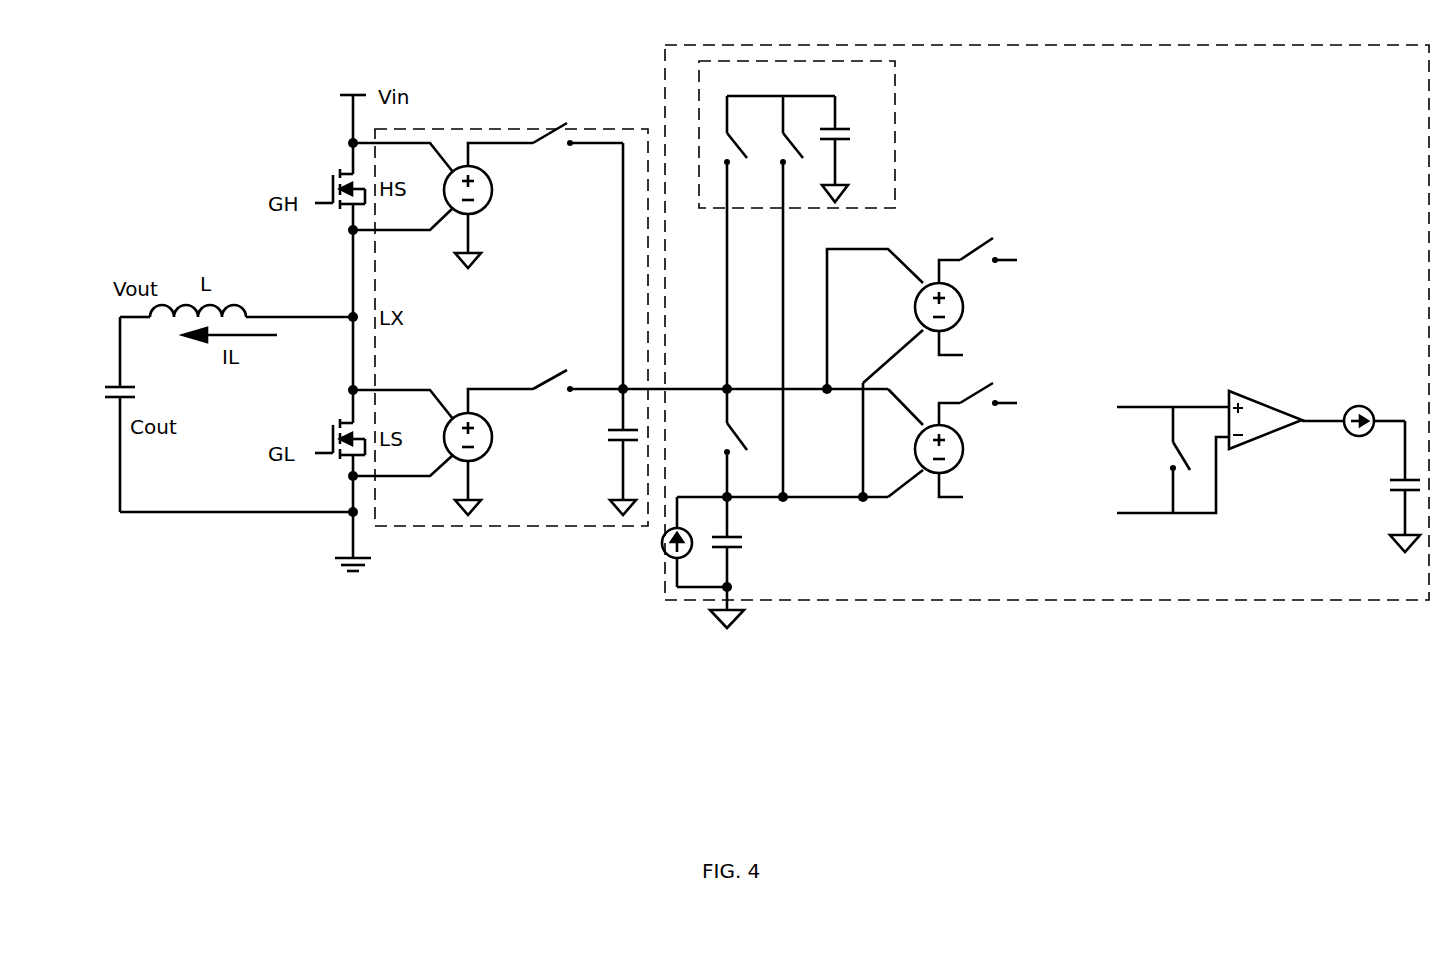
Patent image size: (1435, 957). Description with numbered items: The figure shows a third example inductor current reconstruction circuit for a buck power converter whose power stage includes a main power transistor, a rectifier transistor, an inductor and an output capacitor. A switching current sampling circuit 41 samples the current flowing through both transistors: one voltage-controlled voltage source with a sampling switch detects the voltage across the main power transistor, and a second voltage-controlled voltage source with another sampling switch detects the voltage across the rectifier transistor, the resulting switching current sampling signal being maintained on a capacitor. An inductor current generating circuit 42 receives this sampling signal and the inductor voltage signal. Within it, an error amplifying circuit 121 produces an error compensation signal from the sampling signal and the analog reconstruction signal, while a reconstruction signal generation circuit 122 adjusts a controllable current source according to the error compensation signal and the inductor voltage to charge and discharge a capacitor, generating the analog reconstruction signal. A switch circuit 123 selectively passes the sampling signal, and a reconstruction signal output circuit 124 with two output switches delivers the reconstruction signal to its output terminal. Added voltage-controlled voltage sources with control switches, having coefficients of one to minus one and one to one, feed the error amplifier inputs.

The switching current sampling circuit 41 is at (633, 127).
The inductor current generating circuit 42 is at (986, 345).
The error amplifying circuit 121 is at (1274, 455).
The reconstruction signal generation circuit 122 is at (857, 529).
The switch circuit 123 is at (1202, 543).
The reconstruction signal output circuit 124 is at (896, 151).